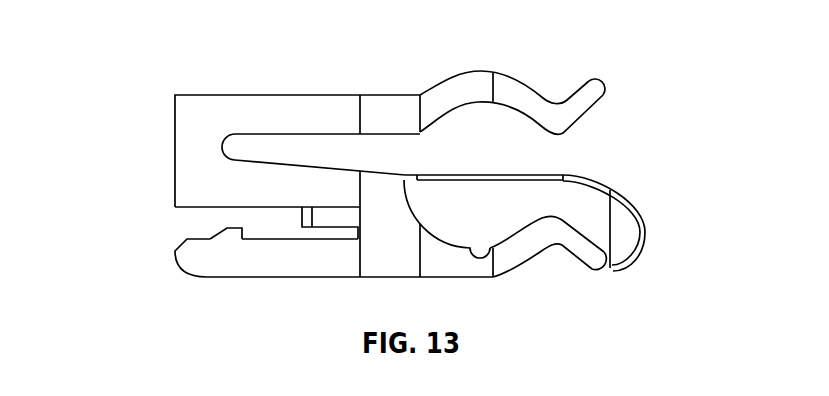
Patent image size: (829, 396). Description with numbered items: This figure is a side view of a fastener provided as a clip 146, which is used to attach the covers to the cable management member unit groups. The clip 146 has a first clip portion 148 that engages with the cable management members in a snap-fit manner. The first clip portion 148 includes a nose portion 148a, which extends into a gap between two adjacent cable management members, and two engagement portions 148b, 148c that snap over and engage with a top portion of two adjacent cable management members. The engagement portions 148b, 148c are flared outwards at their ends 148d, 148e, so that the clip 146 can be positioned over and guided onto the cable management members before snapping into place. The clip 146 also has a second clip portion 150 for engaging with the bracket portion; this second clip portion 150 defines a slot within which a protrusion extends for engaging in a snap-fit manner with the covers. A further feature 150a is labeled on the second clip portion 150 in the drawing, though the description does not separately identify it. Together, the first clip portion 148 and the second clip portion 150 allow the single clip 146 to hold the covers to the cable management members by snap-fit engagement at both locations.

The clip 146 is at (200, 73).
The first clip portion 148 is at (572, 179).
The nose portion 148a is at (627, 240).
The engagement portion 148b is at (557, 133).
The engagement portion 148c is at (550, 213).
The flared end 148d is at (598, 76).
The flared end 148e is at (598, 272).
The second clip portion 150 is at (292, 272).
The tab 150a is at (232, 235).